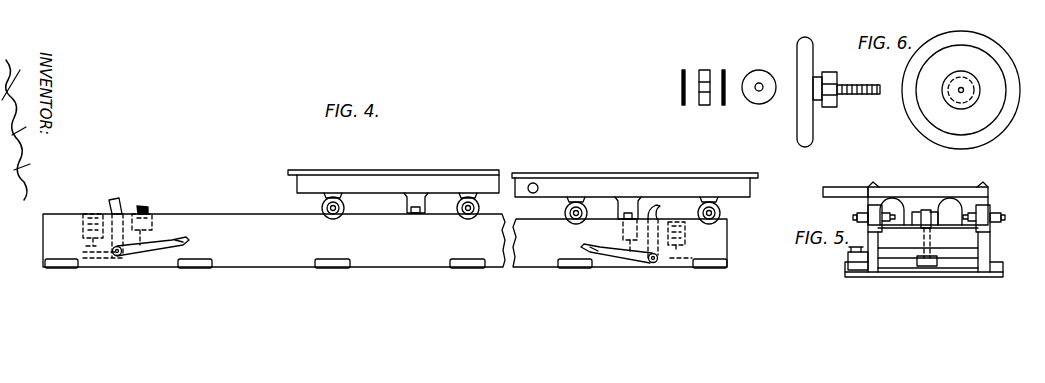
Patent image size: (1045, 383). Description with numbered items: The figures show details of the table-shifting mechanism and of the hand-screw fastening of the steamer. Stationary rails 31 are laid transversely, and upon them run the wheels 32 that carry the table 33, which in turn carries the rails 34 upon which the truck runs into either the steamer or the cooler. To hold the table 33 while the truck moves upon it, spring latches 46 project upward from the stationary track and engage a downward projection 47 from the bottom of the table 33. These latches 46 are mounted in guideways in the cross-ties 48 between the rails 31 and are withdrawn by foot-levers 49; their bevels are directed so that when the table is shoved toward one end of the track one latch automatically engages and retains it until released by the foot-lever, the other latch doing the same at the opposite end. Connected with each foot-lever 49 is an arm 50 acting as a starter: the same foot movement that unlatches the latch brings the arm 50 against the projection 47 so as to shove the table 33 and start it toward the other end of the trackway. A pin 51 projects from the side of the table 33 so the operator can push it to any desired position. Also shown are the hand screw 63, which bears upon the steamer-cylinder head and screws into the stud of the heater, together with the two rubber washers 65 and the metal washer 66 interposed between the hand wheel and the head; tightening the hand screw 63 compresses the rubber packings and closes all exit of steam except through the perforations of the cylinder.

In FIG. 4, the rails 31 is at (385, 241).
In FIG. 5, the rails 31 is at (1000, 258).
In FIG. 4, the wheels 32 is at (345, 208).
In FIG. 5, the wheels 32 is at (993, 230).
In FIG. 6, the wheels 32 is at (961, 90).
In FIG. 4, the table 33 is at (726, 194).
In FIG. 5, the table 33 is at (934, 193).
In FIG. 4, the rails 34 is at (399, 175).
In FIG. 5, the rails 34 is at (878, 183).
In FIG. 4, the spring latches 46 is at (148, 206).
In FIG. 4, the downward projection 47 is at (407, 214).
In FIG. 5, the downward projection 47 is at (932, 214).
In FIG. 4, the cross-ties 48 is at (618, 226).
In FIG. 5, the cross-ties 48 is at (909, 247).
In FIG. 4, the foot-levers 49 is at (190, 239).
In FIG. 5, the foot-levers 49 is at (850, 264).
In FIG. 4, the arm 50 is at (119, 203).
In FIG. 4, the pin 51 is at (536, 184).
In FIG. 5, the pin 51 is at (832, 187).
In FIG. 6, the hand screw 63 is at (797, 110).
In FIG. 6, the rubber washers 65 is at (683, 108).
In FIG. 6, the metal washer 66 is at (708, 70).